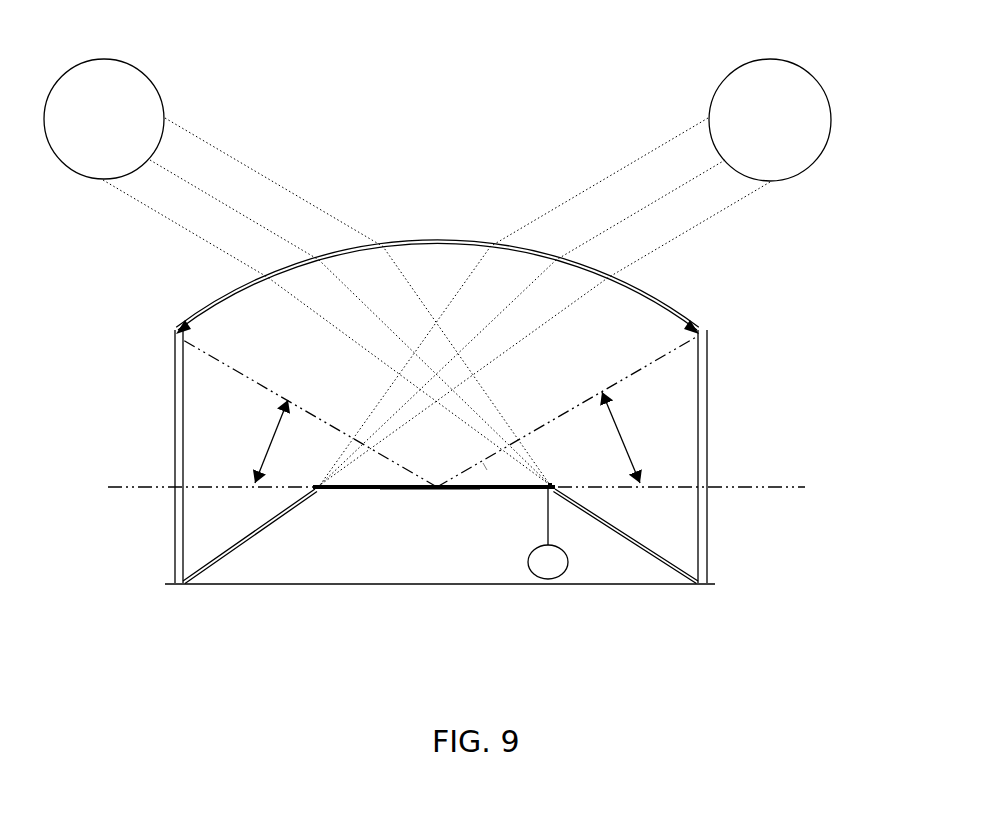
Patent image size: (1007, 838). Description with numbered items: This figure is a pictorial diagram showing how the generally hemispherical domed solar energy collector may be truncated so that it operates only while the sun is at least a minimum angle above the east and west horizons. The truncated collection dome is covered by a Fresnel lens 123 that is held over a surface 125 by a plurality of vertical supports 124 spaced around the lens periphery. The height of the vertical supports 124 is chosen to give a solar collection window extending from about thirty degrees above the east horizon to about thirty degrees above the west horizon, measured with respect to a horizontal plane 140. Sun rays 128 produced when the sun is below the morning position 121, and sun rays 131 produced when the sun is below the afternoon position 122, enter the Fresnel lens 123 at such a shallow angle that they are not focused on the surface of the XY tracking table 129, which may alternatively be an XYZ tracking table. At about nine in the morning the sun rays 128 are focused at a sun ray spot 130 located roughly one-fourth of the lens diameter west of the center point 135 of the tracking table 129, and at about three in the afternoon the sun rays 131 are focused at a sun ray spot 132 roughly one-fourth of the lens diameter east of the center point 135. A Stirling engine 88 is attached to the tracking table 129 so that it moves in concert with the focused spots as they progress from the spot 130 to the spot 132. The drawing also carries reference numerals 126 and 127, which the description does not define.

The morning position 121 is at (143, 77).
The afternoon position 122 is at (725, 72).
The Fresnel lens 123 is at (427, 242).
The vertical supports 124 is at (175, 415).
The surface 125 is at (292, 586).
The focal region 126 is at (483, 463).
The inclined reflector 127 is at (215, 552).
The sun rays 128 is at (385, 327).
The XY tracking table 129 is at (388, 490).
The sun ray spot 130 is at (548, 481).
The sun rays 131 is at (660, 200).
The sun ray spot 132 is at (313, 493).
The center point 135 is at (433, 490).
The Stirling engine 88 is at (558, 572).
The horizontal plane 140 is at (763, 487).